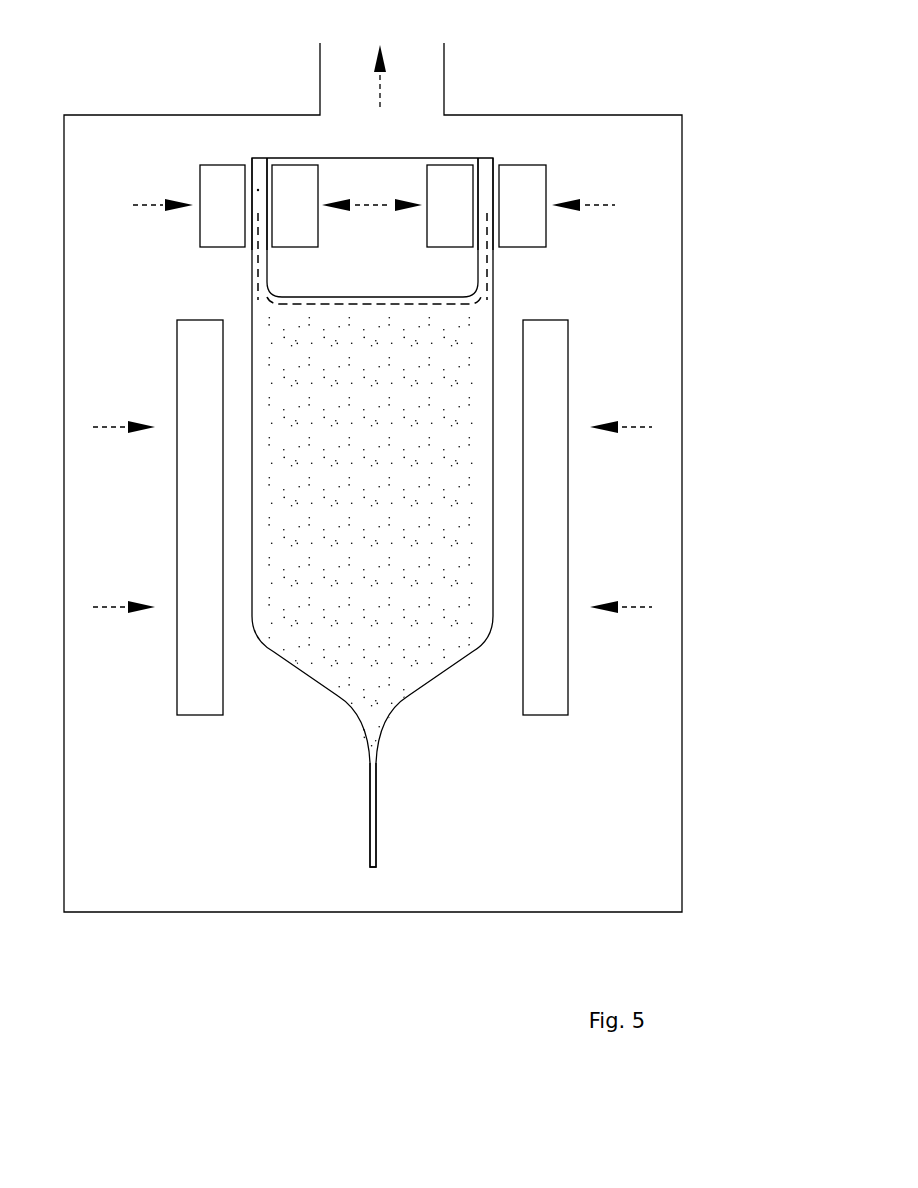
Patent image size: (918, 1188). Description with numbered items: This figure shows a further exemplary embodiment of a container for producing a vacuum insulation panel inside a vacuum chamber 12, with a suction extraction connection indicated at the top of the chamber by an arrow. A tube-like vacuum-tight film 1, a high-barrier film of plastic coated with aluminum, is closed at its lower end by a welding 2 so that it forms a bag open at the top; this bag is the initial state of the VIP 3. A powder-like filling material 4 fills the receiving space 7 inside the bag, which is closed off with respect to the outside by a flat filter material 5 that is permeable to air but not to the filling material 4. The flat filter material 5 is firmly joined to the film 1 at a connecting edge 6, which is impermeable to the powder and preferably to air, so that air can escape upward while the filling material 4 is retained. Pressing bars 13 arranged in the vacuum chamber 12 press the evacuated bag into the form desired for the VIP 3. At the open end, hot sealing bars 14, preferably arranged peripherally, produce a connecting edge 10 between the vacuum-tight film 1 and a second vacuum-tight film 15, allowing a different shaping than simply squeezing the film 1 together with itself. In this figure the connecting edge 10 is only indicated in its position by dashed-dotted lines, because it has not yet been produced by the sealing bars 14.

The vacuum-tight film 1 is at (421, 703).
The welding 2 is at (377, 818).
The VIP 3 is at (325, 760).
The powder-like filling material 4 is at (336, 617).
The flat filter material 5 is at (302, 307).
The connecting edge 6 is at (248, 247).
The receiving space 7 is at (395, 540).
The connecting edge 10 is at (257, 157).
The vacuum chamber 12 is at (618, 115).
The pressing bars 13 is at (176, 500).
The hot sealing bars 14 is at (213, 173).
The second vacuum-tight film 15 is at (485, 273).